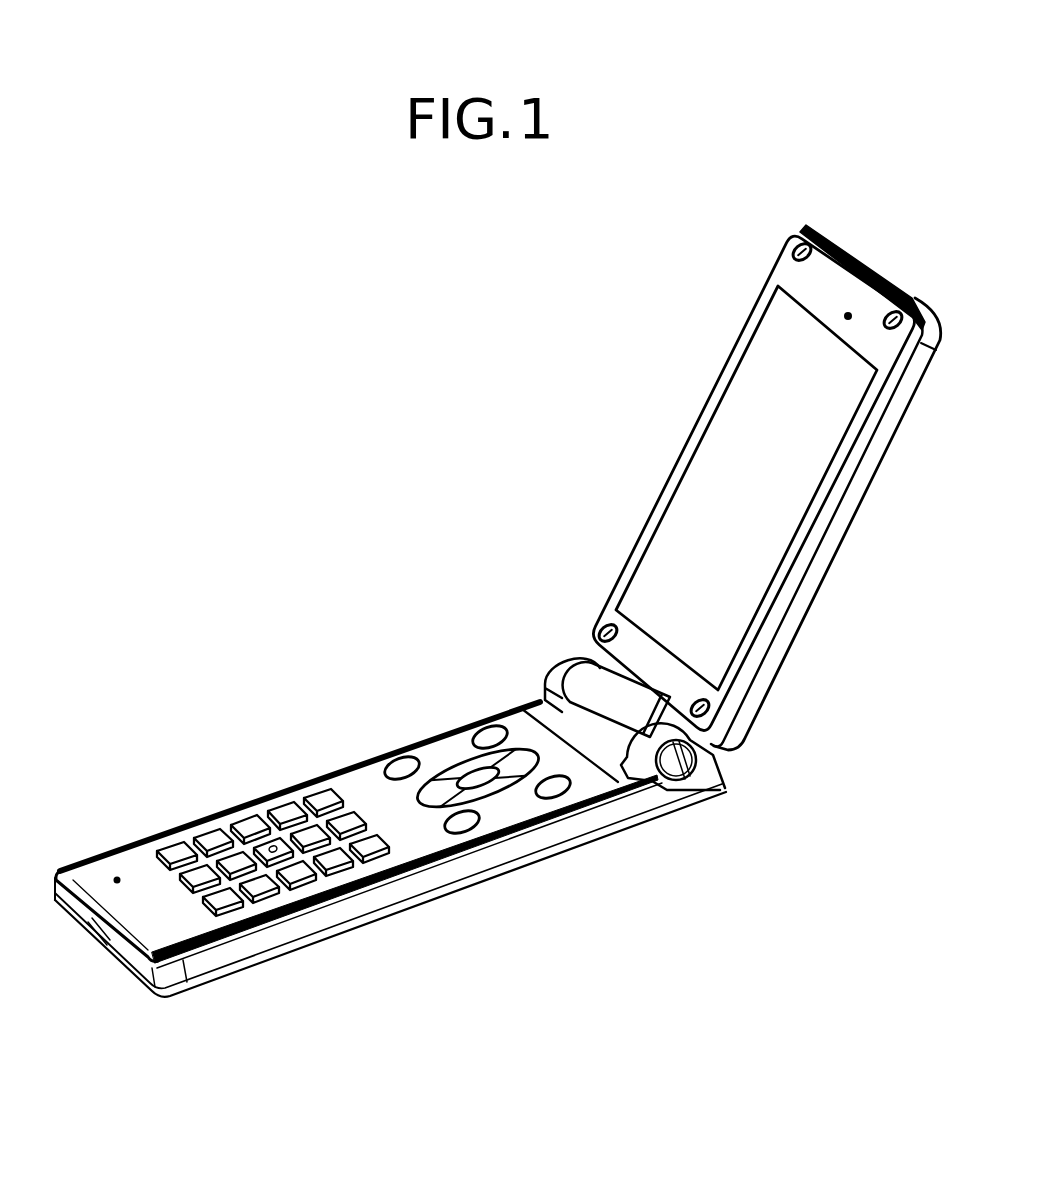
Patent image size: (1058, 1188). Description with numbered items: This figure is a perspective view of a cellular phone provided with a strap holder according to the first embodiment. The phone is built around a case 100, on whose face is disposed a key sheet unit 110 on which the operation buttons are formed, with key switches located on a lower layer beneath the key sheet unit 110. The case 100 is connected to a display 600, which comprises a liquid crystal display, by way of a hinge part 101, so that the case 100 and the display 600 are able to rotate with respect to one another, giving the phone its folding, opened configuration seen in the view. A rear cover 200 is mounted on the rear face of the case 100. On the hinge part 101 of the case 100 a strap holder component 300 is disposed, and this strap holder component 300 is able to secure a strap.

The case 100 is at (498, 611).
The rear cover 200 is at (643, 805).
The display 600 is at (813, 558).
The key sheet unit 110 is at (370, 790).
The hinge part 101 is at (563, 670).
The strap holder component 300 is at (717, 767).